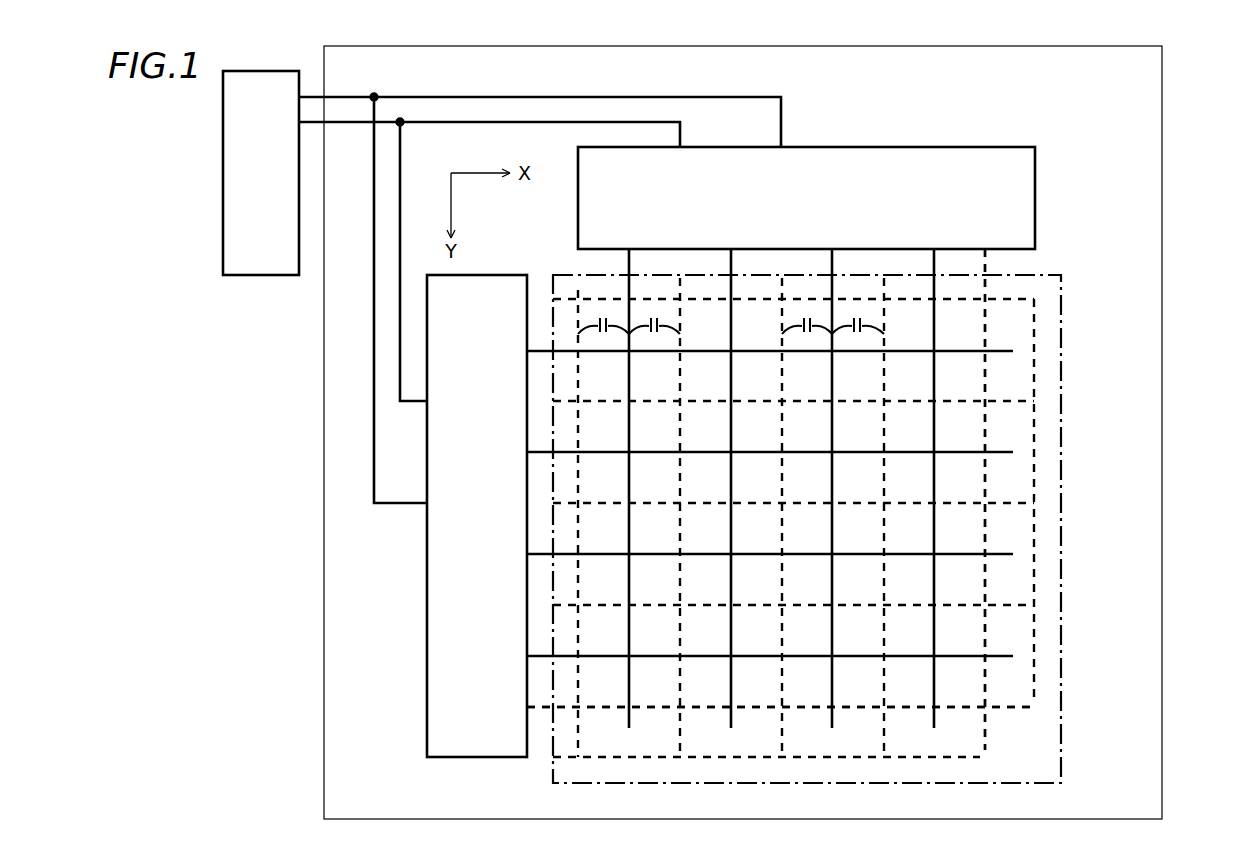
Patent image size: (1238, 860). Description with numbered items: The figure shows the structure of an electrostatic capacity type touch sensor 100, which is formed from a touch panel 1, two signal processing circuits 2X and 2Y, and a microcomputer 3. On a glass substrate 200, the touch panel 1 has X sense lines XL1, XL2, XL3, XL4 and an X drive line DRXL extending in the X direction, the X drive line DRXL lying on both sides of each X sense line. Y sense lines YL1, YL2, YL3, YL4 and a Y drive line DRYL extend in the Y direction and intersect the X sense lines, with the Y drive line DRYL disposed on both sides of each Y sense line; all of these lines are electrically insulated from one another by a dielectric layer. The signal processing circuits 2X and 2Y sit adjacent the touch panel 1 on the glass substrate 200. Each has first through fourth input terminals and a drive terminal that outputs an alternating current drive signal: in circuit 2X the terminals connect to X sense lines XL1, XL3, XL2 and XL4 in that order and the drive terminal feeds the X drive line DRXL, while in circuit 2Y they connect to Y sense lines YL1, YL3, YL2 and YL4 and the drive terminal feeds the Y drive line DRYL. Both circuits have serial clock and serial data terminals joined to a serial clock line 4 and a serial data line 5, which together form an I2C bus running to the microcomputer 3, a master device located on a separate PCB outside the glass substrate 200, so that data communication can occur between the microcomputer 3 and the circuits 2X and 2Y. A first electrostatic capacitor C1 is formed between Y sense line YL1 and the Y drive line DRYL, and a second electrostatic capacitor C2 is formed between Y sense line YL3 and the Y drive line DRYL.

The touch panel 1 is at (1045, 273).
The microcomputer 3 is at (265, 276).
The serial clock line 4 is at (547, 122).
The serial data line 5 is at (491, 97).
The electrostatic capacity type touch sensor 100 is at (834, 83).
The glass substrate 200 is at (1152, 263).
The signal processing circuit 2X is at (427, 605).
The signal processing circuit 2Y is at (933, 157).
The first electrostatic capacitor C1 is at (619, 340).
The second electrostatic capacitor C2 is at (821, 340).
The X sense line XL1 is at (1000, 349).
The X sense line XL2 is at (1000, 450).
The X sense line XL3 is at (1000, 552).
The X sense line XL4 is at (1000, 654).
The Y sense line YL1 is at (631, 729).
The Y sense line YL2 is at (733, 729).
The Y sense line YL3 is at (834, 729).
The Y sense line YL4 is at (936, 729).
The X drive line DRXL is at (996, 707).
The Y drive line DRYL is at (580, 722).